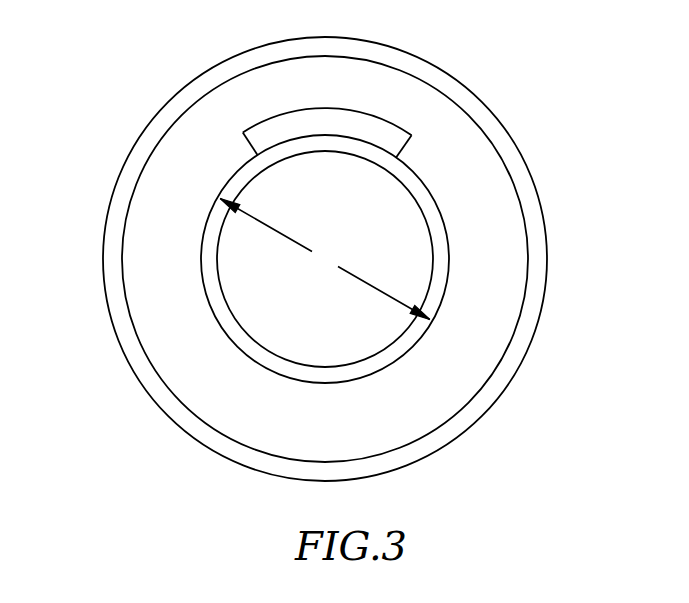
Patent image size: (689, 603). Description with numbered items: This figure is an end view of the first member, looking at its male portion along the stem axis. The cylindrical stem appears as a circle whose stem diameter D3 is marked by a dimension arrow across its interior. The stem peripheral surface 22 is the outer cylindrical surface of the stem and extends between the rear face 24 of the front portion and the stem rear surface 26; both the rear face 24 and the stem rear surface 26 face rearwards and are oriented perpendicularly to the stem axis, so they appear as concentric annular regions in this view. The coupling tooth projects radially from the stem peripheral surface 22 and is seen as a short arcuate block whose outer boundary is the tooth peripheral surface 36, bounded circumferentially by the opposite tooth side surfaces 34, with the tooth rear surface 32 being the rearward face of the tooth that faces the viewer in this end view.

The stem peripheral surface 22 is at (388, 363).
The rear face 24 is at (482, 192).
The stem rear surface 26 is at (405, 268).
The tooth rear surface 32 is at (390, 145).
The tooth side surfaces 34 is at (255, 143).
The tooth peripheral surface 36 is at (385, 120).
The stem diameter D3 is at (325, 259).